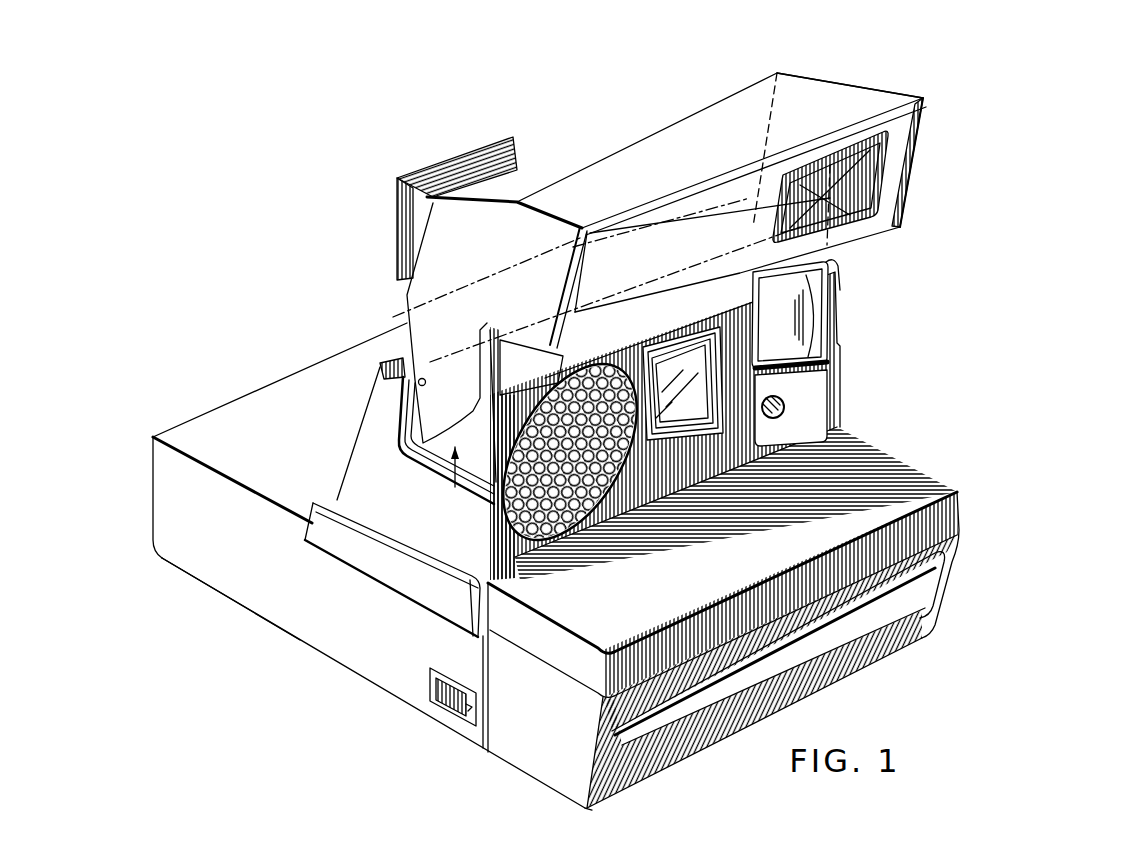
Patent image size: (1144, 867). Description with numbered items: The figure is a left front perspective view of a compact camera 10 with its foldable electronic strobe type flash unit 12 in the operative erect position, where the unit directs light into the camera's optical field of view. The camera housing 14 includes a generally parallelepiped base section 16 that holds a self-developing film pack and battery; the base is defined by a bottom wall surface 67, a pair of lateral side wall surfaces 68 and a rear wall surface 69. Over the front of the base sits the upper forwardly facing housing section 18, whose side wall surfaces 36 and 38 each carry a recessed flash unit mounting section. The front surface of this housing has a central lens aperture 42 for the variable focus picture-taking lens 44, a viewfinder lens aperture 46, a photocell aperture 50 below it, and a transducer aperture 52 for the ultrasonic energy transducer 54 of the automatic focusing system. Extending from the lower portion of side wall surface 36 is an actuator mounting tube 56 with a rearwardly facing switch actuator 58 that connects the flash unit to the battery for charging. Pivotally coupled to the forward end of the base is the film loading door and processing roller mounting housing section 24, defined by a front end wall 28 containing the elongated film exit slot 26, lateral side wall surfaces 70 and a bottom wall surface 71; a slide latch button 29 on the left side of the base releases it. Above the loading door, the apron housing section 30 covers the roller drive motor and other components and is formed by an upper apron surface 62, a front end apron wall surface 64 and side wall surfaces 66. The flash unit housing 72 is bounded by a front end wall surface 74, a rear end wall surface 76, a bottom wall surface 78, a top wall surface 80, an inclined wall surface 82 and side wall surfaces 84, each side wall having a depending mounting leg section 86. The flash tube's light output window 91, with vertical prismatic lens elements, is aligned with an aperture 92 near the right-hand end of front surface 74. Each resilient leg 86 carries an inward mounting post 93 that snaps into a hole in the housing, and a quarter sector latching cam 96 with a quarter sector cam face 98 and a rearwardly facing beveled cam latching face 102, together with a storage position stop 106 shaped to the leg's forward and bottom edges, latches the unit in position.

The compact camera 10 is at (985, 310).
The electronic strobe type flash unit 12 is at (935, 157).
The camera housing 14 is at (150, 435).
The base section 16 is at (257, 618).
The upper forwardly facing housing section 18 is at (841, 272).
The film loading door and processing roller mounting housing section 24 is at (521, 786).
The film exit slot 26 is at (900, 620).
The front end wall 28 is at (657, 770).
The slide latch button 29 is at (443, 712).
The apron housing section 30 is at (962, 490).
The side wall surface 36 is at (362, 467).
The side wall surface 38 is at (838, 378).
The lens aperture 42 is at (708, 380).
The picture-taking lens 44 is at (690, 363).
The viewfinder lens aperture 46 is at (820, 302).
The photocell aperture 50 is at (785, 413).
The transducer aperture 52 is at (580, 550).
The ultrasonic energy transducer 54 is at (528, 572).
The actuator mounting tube 56 is at (357, 553).
The push button type switch actuator 58 is at (313, 510).
The upper apron surface 62 is at (863, 455).
The front end apron wall surface 64 is at (948, 517).
The side wall surfaces 66 is at (553, 653).
The bottom wall surface 67 is at (208, 584).
The lateral side wall surfaces 68 is at (320, 633).
The rear wall surface 69 is at (153, 490).
The lateral side wall surfaces 70 is at (503, 748).
The bottom wall surface 71 is at (592, 812).
The flash unit housing 72 is at (855, 71).
The front end wall surface 74 is at (902, 174).
The rear end wall surface 76 is at (410, 293).
The bottom wall surface 78 is at (527, 367).
The top wall surface 80 is at (870, 90).
The inclined wall surface 82 is at (798, 73).
The side wall surfaces 84 is at (468, 238).
The mounting leg section 86 is at (467, 375).
The light output window 91 is at (848, 203).
The aperture 92 is at (897, 138).
The mounting post 93 is at (424, 379).
The quarter sector latching cam 96 is at (453, 478).
The quarter sector cam face 98 is at (435, 437).
The rearwardly facing beveled cam latching face 102 is at (427, 410).
The storage position stop 106 is at (412, 433).